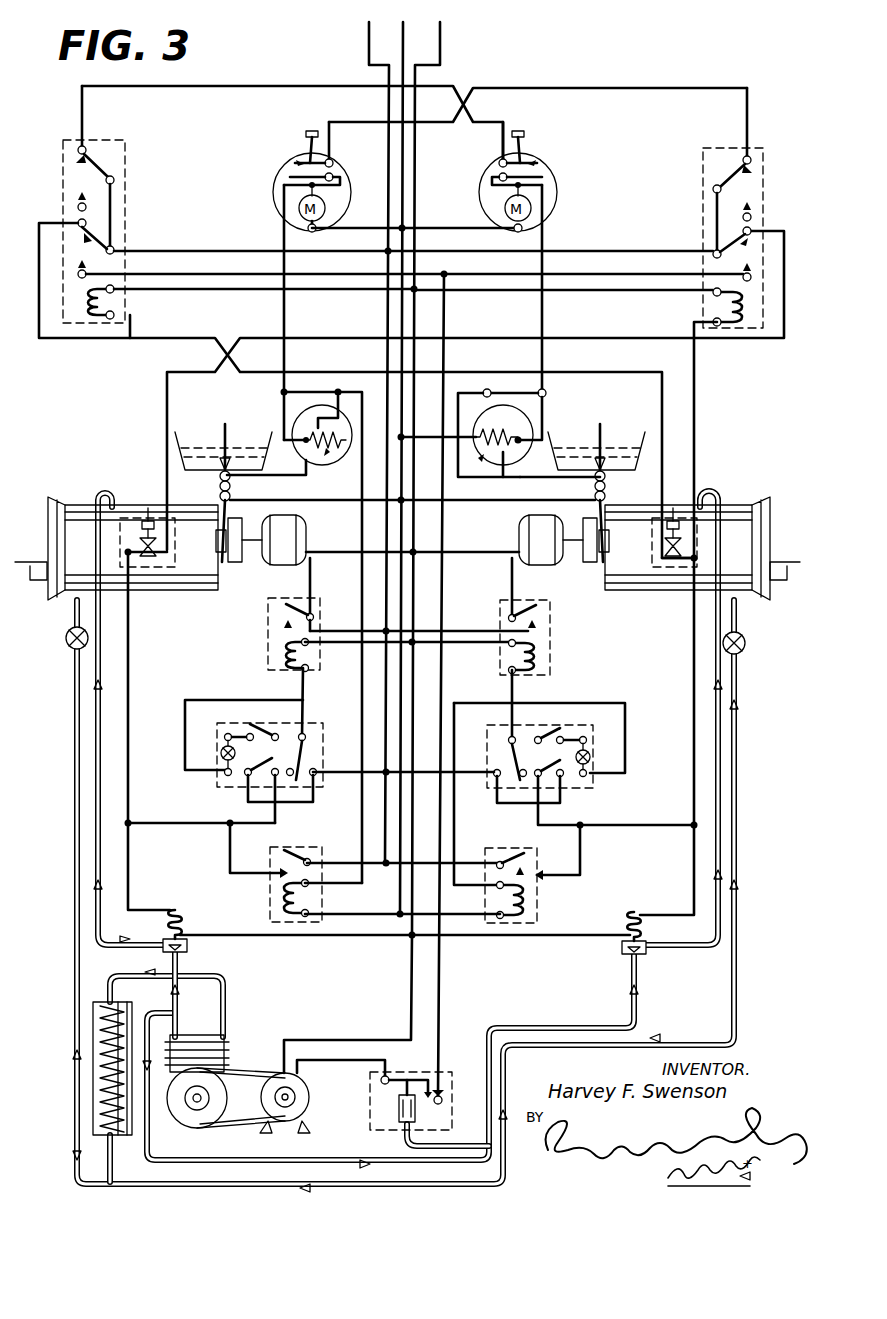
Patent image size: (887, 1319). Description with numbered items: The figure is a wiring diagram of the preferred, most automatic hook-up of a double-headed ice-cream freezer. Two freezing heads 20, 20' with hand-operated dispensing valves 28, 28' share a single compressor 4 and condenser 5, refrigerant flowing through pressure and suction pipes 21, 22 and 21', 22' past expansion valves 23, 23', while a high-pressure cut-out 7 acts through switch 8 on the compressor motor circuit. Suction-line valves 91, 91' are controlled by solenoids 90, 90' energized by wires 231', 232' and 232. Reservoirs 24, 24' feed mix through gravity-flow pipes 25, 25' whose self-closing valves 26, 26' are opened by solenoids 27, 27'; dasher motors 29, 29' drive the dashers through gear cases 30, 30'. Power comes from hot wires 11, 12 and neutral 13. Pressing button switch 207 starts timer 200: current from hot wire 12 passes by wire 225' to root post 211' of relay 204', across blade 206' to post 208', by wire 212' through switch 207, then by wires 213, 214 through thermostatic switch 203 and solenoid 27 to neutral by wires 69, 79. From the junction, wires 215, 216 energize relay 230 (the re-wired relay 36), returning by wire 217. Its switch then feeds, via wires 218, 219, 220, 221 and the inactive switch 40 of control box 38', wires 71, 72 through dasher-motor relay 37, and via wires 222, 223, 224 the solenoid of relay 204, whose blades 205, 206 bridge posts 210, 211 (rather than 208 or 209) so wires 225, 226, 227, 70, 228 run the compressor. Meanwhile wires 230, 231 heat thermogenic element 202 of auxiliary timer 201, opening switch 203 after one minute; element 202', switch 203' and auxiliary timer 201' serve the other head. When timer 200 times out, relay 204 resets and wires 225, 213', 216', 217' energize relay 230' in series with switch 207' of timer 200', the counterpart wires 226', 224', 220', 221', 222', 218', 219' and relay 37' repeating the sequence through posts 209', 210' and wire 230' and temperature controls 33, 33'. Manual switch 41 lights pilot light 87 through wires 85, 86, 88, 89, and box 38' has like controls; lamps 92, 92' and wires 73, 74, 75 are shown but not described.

The hot wire 11 is at (443, 36).
The hot wire 12 is at (367, 46).
The neutral wire 13 is at (405, 32).
The wire 212' is at (292, 123).
The post 208' is at (98, 131).
The switch blade 206' is at (134, 197).
The relay 204' is at (122, 231).
The post 209' is at (78, 265).
The root post 211' is at (124, 236).
The wire 225' is at (253, 242).
The wire 226' is at (261, 267).
The wire 224' is at (266, 298).
The post 210' is at (79, 298).
The relay 230' is at (410, 616).
The button switch 207' is at (290, 148).
The timer 200' is at (291, 177).
The wire 213' is at (383, 312).
The button switch 207 is at (544, 148).
The timer 200 is at (540, 177).
The wire 213 is at (565, 287).
The wire 225 is at (550, 240).
The wire 226 is at (593, 265).
The wire 224 is at (563, 300).
The relay 230 is at (475, 571).
The relay 204 is at (711, 238).
The post 208 is at (565, 137).
The switch blade 206 is at (757, 214).
The post 209 is at (772, 210).
The switch blade 205 is at (758, 236).
The root post 211 is at (715, 245).
The post 210 is at (748, 294).
The wire 227 is at (445, 318).
The wire 223 is at (696, 425).
The thermogenic element 202' is at (330, 628).
The reservoir 24' is at (223, 438).
The thermostatic switch 203' is at (307, 451).
The auxiliary timer 201' is at (289, 446).
The thermogenic element 202 is at (437, 425).
The wire 231 is at (559, 675).
The wire 215 is at (538, 393).
The auxiliary timer 201 is at (520, 431).
The wire 214 is at (545, 420).
The self-closing valve 26 is at (616, 446).
The thermostatic switch 203 is at (490, 453).
The wire 69 is at (540, 476).
The reservoir 24 is at (598, 464).
The wire 79 is at (497, 493).
The solenoid 27 is at (585, 490).
The self-closing valve 26' is at (211, 457).
The solenoid 27' is at (296, 493).
The valve actuator 92 is at (677, 512).
The freezing head 20 is at (696, 538).
The valve actuator 92' is at (147, 512).
The freezing head 20' is at (133, 558).
The dispensing valve 28 is at (785, 555).
The dispensing valve 28' is at (31, 584).
The temperature control 33 is at (669, 563).
The temperature control 33' is at (161, 542).
The gravity-flow pipe 25' is at (239, 531).
The dasher motor 29' is at (339, 558).
The gear case 30' is at (250, 552).
The gravity-flow pipe 25 is at (595, 531).
The dasher motor 29 is at (528, 534).
The gear case 30 is at (580, 552).
The conductor 75 is at (478, 551).
The conductor 74 is at (510, 578).
The dasher-motor relay 37' is at (276, 635).
The dasher-motor relay 37 is at (545, 637).
The conductor 73 is at (470, 630).
The wire 72 is at (476, 643).
The wire 71 is at (514, 690).
The manual control box 38' is at (254, 755).
The compressor-motor relay 36 is at (481, 734).
The single-pole switch 40 is at (516, 738).
The double-pole switch 41 is at (542, 732).
The wire 88 is at (584, 736).
The pilot light 87 is at (590, 756).
The wire 89 is at (626, 748).
The wire 85 is at (478, 770).
The wire 86 is at (520, 806).
The wire 220' is at (297, 803).
The wire 221' is at (200, 833).
The wire 220 is at (566, 803).
The wire 221 is at (637, 818).
The wire 222' is at (148, 687).
The wire 222 is at (672, 691).
The expansion valve 23 is at (751, 635).
The expansion valve 23' is at (77, 638).
The pressure pipe 21 is at (750, 794).
The suction pipe 22 is at (708, 718).
The pressure pipe 21' is at (394, 896).
The suction pipe 22' is at (100, 719).
The wire 219' is at (257, 872).
The wire 216' is at (348, 846).
The wire 217' is at (344, 899).
The wire 218' is at (349, 881).
The wire 218 is at (443, 873).
The wire 216 is at (475, 794).
The wire 219 is at (559, 852).
The wire 217 is at (468, 885).
The wire 231' is at (152, 866).
The solenoid 90' is at (189, 924).
The suction line valve 91' is at (194, 988).
The wire 232' is at (296, 946).
The wire 232 is at (521, 949).
The solenoid 90 is at (654, 928).
The suction line valve 91 is at (415, 1054).
The condenser 5 is at (92, 1010).
The wire 228 is at (410, 1013).
The compressor 4 is at (232, 1044).
The electric switch 8 is at (412, 1076).
The wire 70 is at (352, 1062).
The high-pressure cut-out 7 is at (369, 1132).